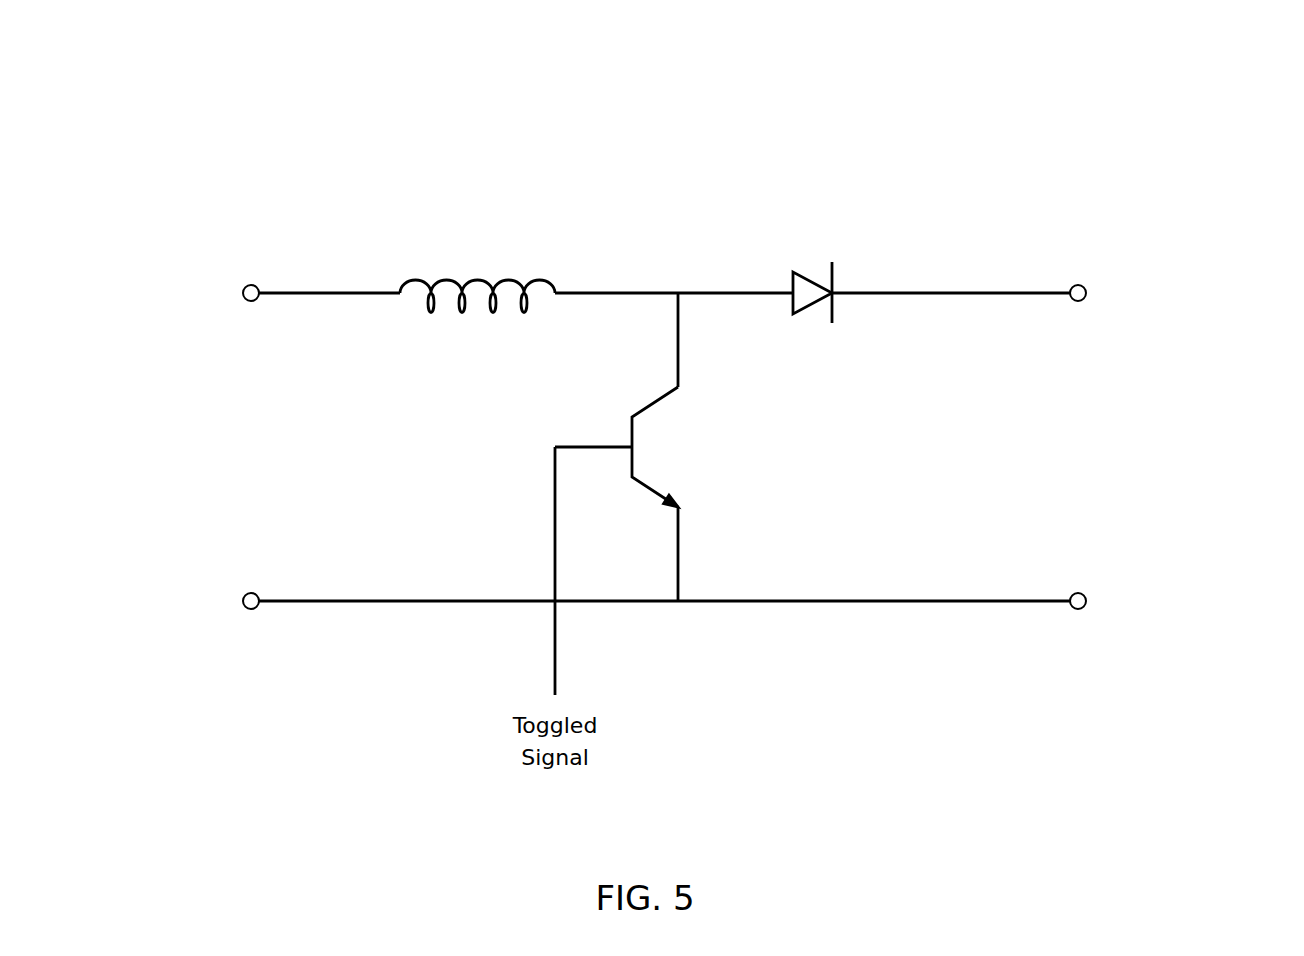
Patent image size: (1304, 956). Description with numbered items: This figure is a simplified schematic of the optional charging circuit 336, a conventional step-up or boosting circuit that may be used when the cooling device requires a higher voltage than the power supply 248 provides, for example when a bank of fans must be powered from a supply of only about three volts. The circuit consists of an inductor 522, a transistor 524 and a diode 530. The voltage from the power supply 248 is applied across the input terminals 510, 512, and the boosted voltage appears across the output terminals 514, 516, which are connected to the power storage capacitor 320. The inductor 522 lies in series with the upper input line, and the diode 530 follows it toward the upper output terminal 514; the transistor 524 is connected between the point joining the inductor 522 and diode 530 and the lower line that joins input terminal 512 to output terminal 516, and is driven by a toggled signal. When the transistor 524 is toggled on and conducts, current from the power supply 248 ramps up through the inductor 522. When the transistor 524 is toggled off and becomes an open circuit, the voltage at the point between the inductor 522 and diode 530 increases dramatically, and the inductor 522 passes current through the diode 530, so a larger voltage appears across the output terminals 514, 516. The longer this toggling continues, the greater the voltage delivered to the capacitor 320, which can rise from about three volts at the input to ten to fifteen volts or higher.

The charging circuit 336 is at (906, 172).
The input terminal 510 is at (250, 302).
The input terminal 512 is at (250, 610).
The output terminal 514 is at (1077, 302).
The output terminal 516 is at (1077, 610).
The inductor 522 is at (478, 279).
The transistor 524 is at (657, 398).
The diode 530 is at (805, 272).
The power supply 248 is at (108, 456).
The power storage capacitor 320 is at (1175, 453).